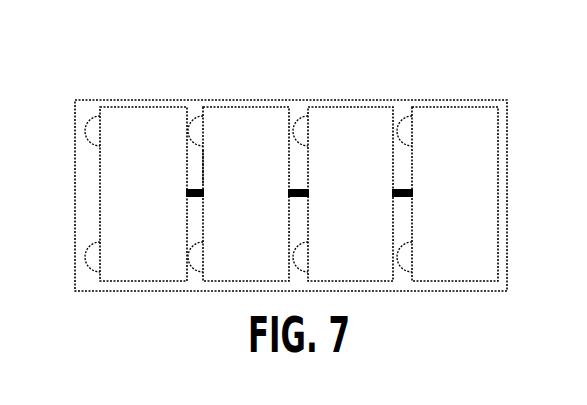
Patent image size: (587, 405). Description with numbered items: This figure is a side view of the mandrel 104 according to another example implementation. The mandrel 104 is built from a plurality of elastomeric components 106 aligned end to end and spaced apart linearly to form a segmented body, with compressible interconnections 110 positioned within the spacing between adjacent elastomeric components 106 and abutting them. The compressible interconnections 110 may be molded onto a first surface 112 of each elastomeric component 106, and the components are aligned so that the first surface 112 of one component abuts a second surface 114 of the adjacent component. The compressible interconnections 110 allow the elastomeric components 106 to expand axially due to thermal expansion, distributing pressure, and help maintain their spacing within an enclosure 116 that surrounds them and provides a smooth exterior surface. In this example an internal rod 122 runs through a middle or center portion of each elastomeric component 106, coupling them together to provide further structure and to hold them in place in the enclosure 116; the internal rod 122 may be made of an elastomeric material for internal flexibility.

The mandrel 104 is at (177, 40).
The elastomeric components 106 is at (251, 98).
The compressible interconnections 110 is at (191, 108).
The first surface 112 is at (192, 157).
The second surface 114 is at (298, 108).
The enclosure 116 is at (410, 90).
The internal rod 122 is at (180, 185).